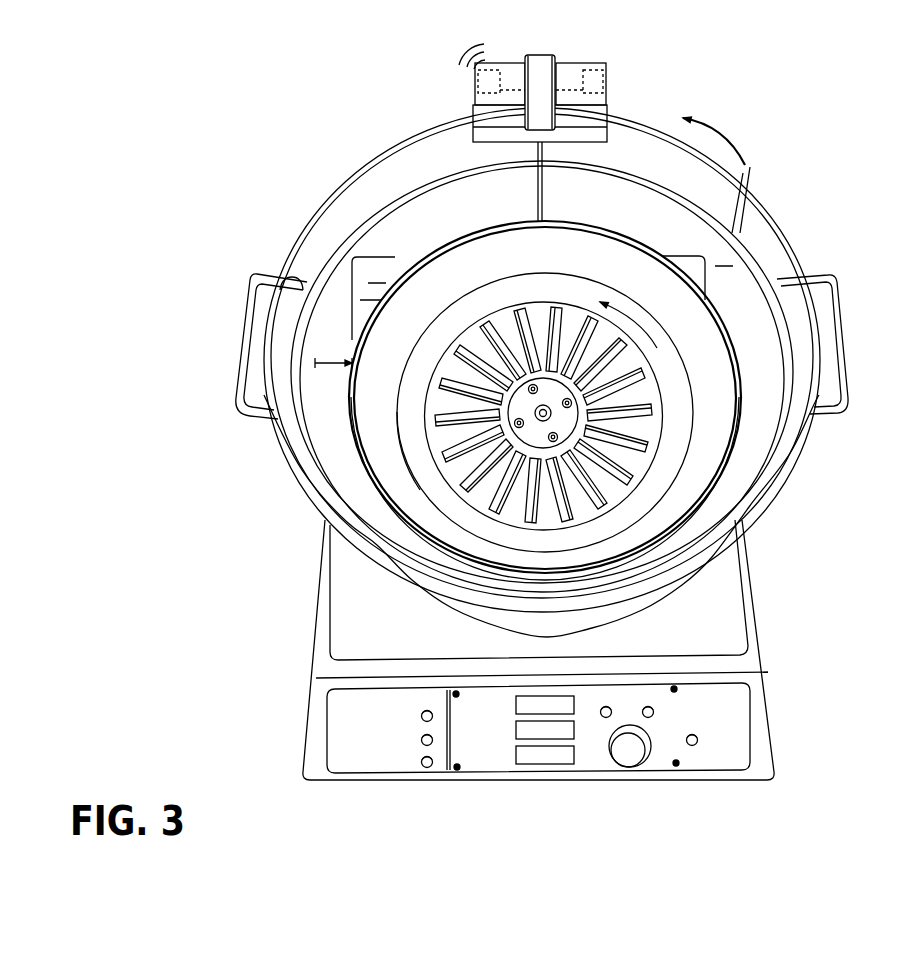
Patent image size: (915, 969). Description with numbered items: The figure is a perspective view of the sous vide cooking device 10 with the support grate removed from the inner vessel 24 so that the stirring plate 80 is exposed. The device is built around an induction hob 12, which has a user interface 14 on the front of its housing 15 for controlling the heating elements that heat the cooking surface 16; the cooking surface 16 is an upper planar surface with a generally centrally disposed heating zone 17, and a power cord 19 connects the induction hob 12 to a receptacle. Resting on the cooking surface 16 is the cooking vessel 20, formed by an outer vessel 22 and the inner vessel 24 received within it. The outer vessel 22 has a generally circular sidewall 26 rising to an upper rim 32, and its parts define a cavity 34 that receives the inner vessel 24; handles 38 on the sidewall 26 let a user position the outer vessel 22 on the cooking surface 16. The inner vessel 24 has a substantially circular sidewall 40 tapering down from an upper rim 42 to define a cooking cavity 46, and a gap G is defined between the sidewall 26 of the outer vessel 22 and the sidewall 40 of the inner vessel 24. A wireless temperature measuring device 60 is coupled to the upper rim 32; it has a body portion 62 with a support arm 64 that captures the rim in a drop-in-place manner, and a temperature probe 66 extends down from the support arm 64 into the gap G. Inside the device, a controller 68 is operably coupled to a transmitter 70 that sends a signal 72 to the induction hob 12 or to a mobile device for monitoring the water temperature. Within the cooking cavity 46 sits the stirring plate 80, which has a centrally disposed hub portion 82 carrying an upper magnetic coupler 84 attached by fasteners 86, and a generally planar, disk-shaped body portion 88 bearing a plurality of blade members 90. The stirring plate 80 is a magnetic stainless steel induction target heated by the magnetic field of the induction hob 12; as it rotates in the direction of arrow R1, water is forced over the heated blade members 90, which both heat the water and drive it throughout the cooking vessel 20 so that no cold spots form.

The sous vide cooking device 10 is at (232, 620).
The induction hob 12 is at (270, 572).
The user interface 14 is at (350, 745).
The housing 15 is at (767, 696).
The cooking surface 16 is at (353, 640).
The heating zone 17 is at (653, 600).
The power cord 19 is at (742, 167).
The cooking vessel 20 is at (807, 197).
The outer vessel 22 is at (795, 230).
The inner vessel 24 is at (757, 400).
The sidewall 26 is at (755, 521).
The upper rim 32 is at (305, 225).
The cavity 34 is at (672, 235).
The handles 38 is at (247, 365).
The sidewall 40 is at (312, 235).
The upper rim 42 is at (400, 465).
The cooking cavity 46 is at (385, 332).
The temperature measuring device 60 is at (623, 68).
The body portion 62 is at (513, 67).
The support arm 64 is at (548, 60).
The temperature probe 66 is at (541, 193).
The controller 68 is at (607, 82).
The transmitter 70 is at (478, 84).
The signal 72 is at (447, 60).
The stirring plate 80 is at (652, 425).
The hub portion 82 is at (482, 458).
The upper magnetic coupler 84 is at (660, 372).
The fasteners 86 is at (523, 313).
The body portion 88 is at (627, 460).
The blade members 90 is at (520, 418).
The gap G is at (333, 355).
The rotation direction arrow R1 is at (633, 318).